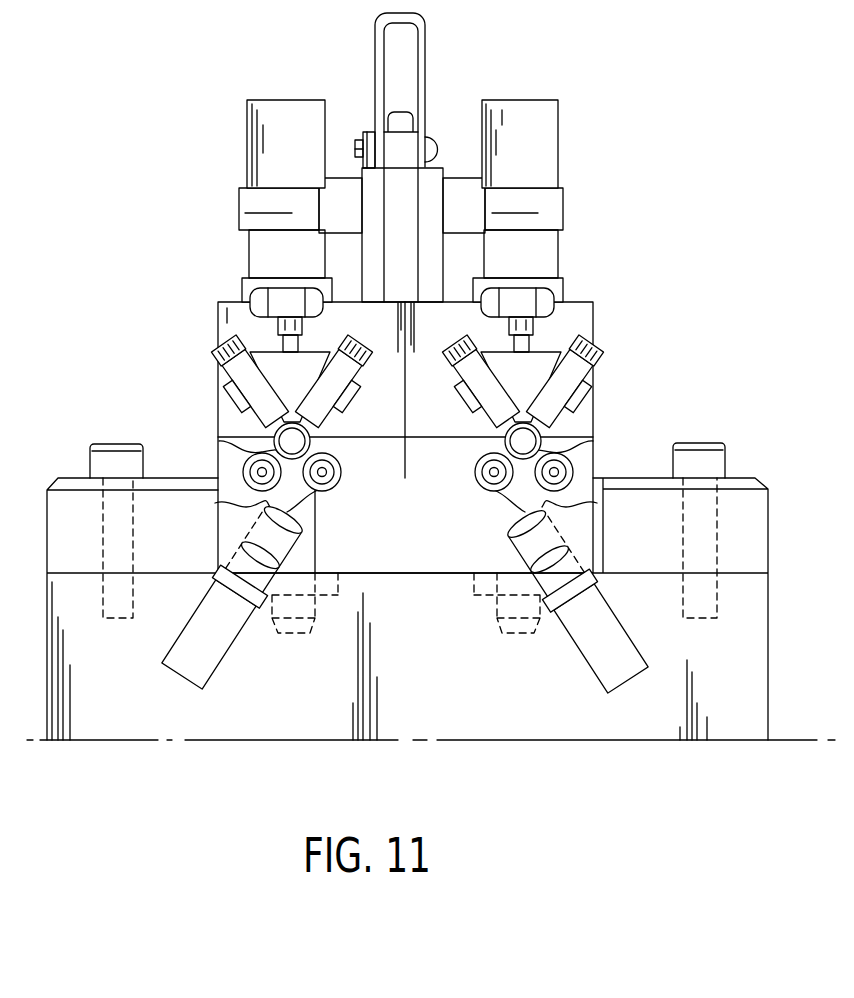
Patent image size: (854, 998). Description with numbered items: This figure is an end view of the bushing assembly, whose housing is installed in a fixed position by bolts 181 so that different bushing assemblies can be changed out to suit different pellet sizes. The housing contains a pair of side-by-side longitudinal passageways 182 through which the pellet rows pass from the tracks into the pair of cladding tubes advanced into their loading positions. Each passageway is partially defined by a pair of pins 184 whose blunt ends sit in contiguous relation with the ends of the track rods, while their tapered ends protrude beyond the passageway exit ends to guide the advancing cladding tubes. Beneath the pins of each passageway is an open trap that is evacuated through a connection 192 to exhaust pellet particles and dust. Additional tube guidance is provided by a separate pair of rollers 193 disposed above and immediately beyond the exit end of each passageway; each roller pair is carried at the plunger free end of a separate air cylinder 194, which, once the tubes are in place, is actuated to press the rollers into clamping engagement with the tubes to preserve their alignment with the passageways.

The bolts 181 is at (98, 460).
The longitudinal passageway 182 is at (220, 420).
The pins 184 is at (247, 484).
The connection 192 is at (205, 587).
The rollers 193 is at (213, 350).
The air cylinder 194 is at (285, 108).